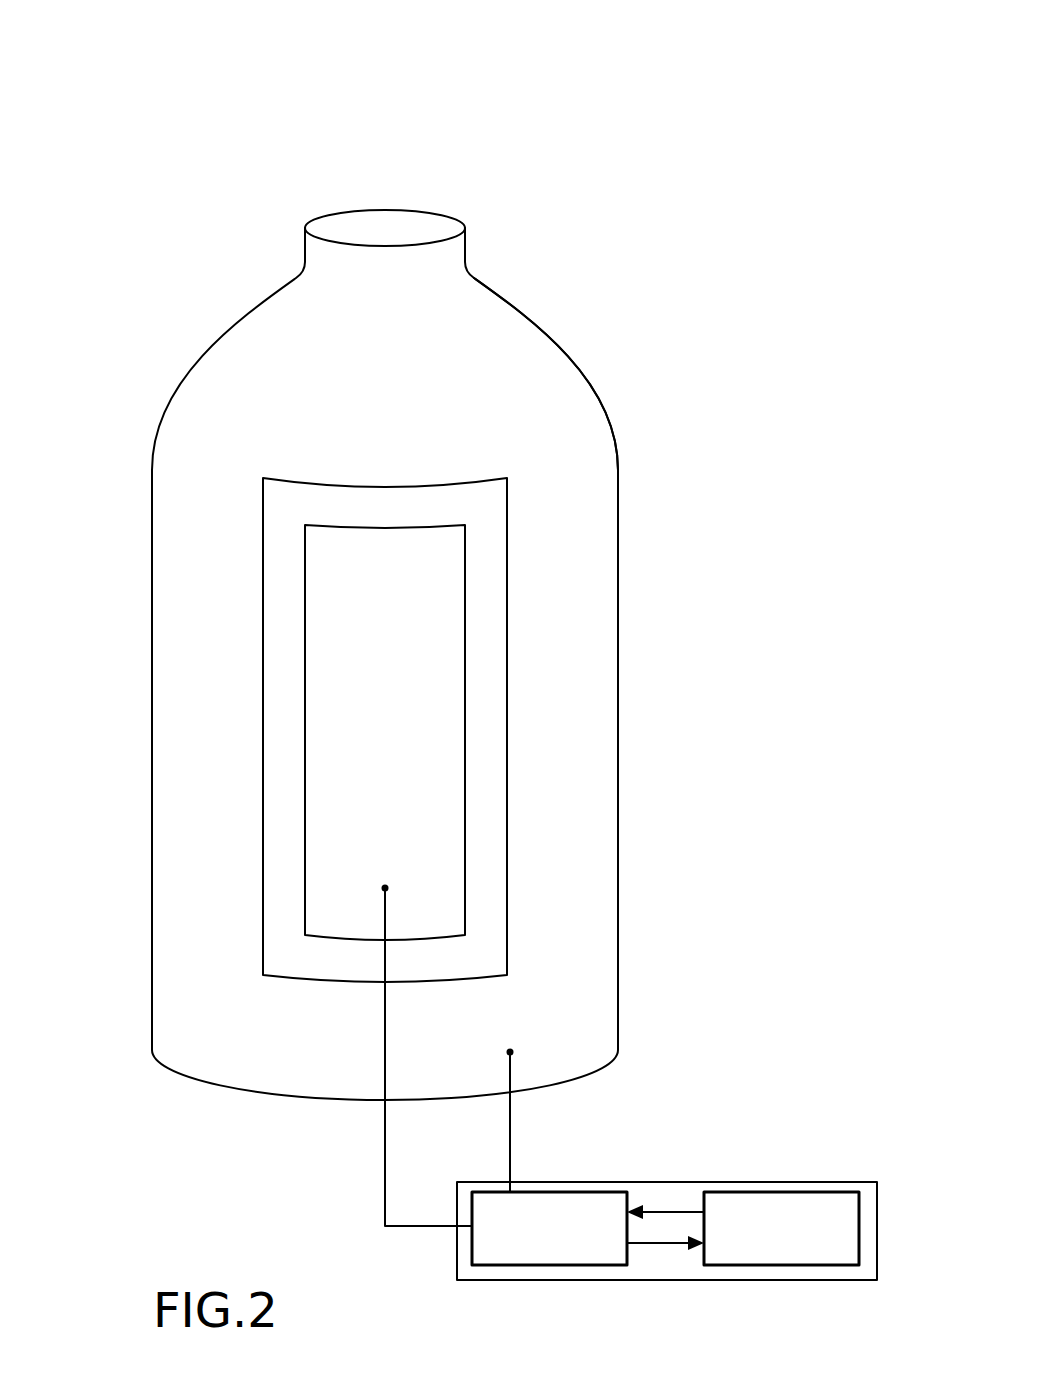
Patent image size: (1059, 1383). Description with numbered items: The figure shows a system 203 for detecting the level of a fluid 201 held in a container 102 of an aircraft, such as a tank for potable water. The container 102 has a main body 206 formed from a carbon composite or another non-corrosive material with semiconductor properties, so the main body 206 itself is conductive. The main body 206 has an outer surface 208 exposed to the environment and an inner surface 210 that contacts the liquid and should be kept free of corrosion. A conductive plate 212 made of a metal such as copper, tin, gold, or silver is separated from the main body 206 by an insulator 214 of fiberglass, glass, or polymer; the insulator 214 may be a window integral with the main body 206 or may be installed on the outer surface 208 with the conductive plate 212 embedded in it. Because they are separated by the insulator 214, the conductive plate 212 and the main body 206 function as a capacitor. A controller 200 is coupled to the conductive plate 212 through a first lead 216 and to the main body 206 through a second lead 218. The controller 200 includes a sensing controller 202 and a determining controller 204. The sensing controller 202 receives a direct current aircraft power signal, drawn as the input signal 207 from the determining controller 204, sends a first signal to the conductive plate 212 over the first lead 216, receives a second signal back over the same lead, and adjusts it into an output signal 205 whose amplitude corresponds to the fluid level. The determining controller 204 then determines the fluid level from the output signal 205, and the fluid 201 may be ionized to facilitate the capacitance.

The system 203 is at (190, 120).
The container 102 is at (221, 306).
The fluid 201 is at (347, 292).
The main body 206 is at (538, 358).
The outer surface 208 is at (152, 542).
The inner surface 210 is at (152, 637).
The conductive plate 212 is at (407, 583).
The insulator 214 is at (487, 848).
The first lead 216 is at (385, 1138).
The second lead 218 is at (513, 1137).
The controller 200 is at (787, 1182).
The sensing controller 202 is at (575, 1265).
The determining controller 204 is at (787, 1265).
The output signal 205 is at (658, 1243).
The input voltage 207 is at (670, 1212).